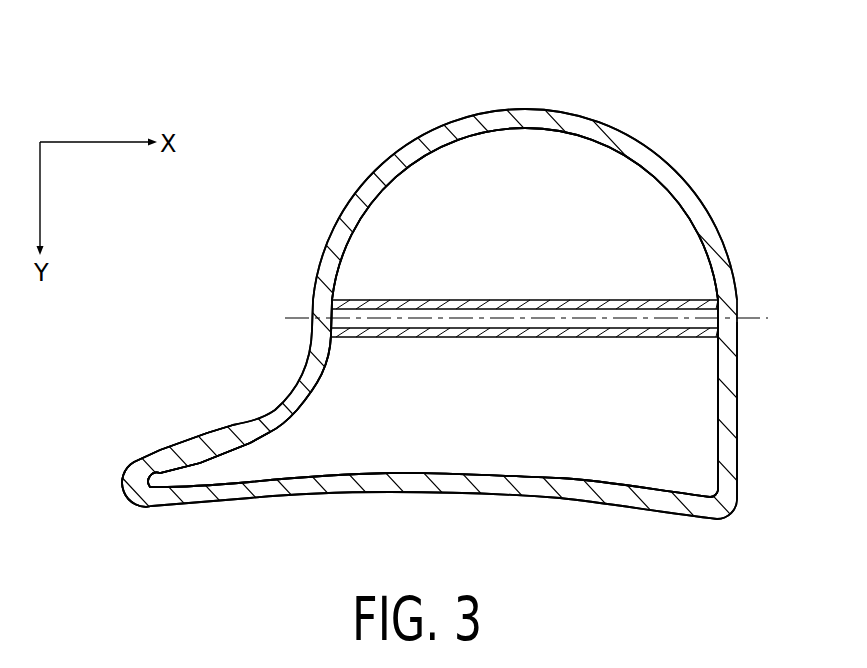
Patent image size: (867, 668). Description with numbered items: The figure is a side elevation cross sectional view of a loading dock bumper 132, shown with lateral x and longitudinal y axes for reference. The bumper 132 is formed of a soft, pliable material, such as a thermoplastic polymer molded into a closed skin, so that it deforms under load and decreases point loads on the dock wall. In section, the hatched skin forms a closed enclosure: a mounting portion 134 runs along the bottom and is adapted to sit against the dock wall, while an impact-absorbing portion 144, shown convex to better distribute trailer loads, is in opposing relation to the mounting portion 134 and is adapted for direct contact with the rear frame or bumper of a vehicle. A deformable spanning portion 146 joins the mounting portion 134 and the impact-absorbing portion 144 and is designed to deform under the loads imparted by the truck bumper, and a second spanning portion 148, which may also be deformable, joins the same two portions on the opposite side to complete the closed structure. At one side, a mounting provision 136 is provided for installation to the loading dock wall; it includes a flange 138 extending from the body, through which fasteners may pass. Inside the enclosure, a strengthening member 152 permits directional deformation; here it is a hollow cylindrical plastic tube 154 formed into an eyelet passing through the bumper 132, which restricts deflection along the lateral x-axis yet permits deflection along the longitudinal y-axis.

The loading dock bumper 132 is at (300, 136).
The mounting portion 134 is at (430, 493).
The mounting provision 136 is at (127, 343).
The flange 138 is at (190, 437).
The impact-absorbing portion 144 is at (542, 110).
The deformable spanning portion 146 is at (741, 400).
The second spanning portion 148 is at (297, 378).
The strengthening member 152 is at (447, 403).
The hollow cylindrical plastic tube 154 is at (566, 300).